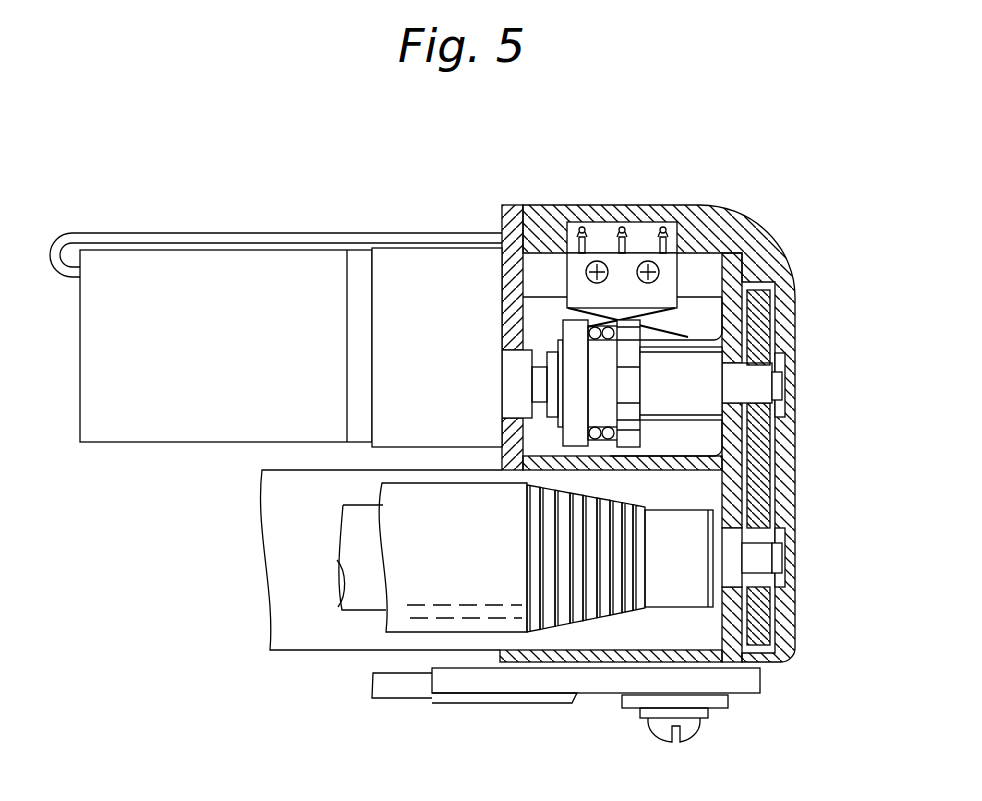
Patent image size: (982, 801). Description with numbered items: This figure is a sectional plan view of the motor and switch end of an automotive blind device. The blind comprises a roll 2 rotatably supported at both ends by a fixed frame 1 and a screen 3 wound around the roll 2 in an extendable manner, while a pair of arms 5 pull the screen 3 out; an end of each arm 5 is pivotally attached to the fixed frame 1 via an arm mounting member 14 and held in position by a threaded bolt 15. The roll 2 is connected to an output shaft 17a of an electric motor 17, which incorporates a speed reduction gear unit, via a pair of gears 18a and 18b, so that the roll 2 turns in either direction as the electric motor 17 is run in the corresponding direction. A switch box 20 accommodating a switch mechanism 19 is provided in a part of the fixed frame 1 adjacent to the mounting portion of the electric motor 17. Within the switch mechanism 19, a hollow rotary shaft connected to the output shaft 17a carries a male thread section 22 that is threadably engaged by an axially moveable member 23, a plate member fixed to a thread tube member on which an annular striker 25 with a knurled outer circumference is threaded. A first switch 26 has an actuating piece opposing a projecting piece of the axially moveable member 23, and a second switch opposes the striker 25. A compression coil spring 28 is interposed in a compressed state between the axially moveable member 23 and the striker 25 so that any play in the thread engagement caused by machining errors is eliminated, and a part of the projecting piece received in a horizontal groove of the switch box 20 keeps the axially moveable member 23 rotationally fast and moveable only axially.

The fixed frame 1 is at (722, 662).
The roll 2 is at (663, 600).
The screen 3 is at (472, 625).
The arm 5 is at (399, 697).
The arm mounting member 14 is at (552, 692).
The threaded bolt 15 is at (680, 742).
The electric motor 17 is at (380, 283).
The output shaft 17a is at (537, 383).
The gear 18a is at (767, 330).
The gear 18b is at (758, 615).
The switch mechanism 19 is at (588, 150).
The switch box 20 is at (755, 443).
The male thread section 22 is at (694, 333).
The axially moveable member 23 is at (570, 332).
The annular striker 25 is at (638, 430).
The first switch 26 is at (640, 266).
The compression coil spring 28 is at (605, 441).